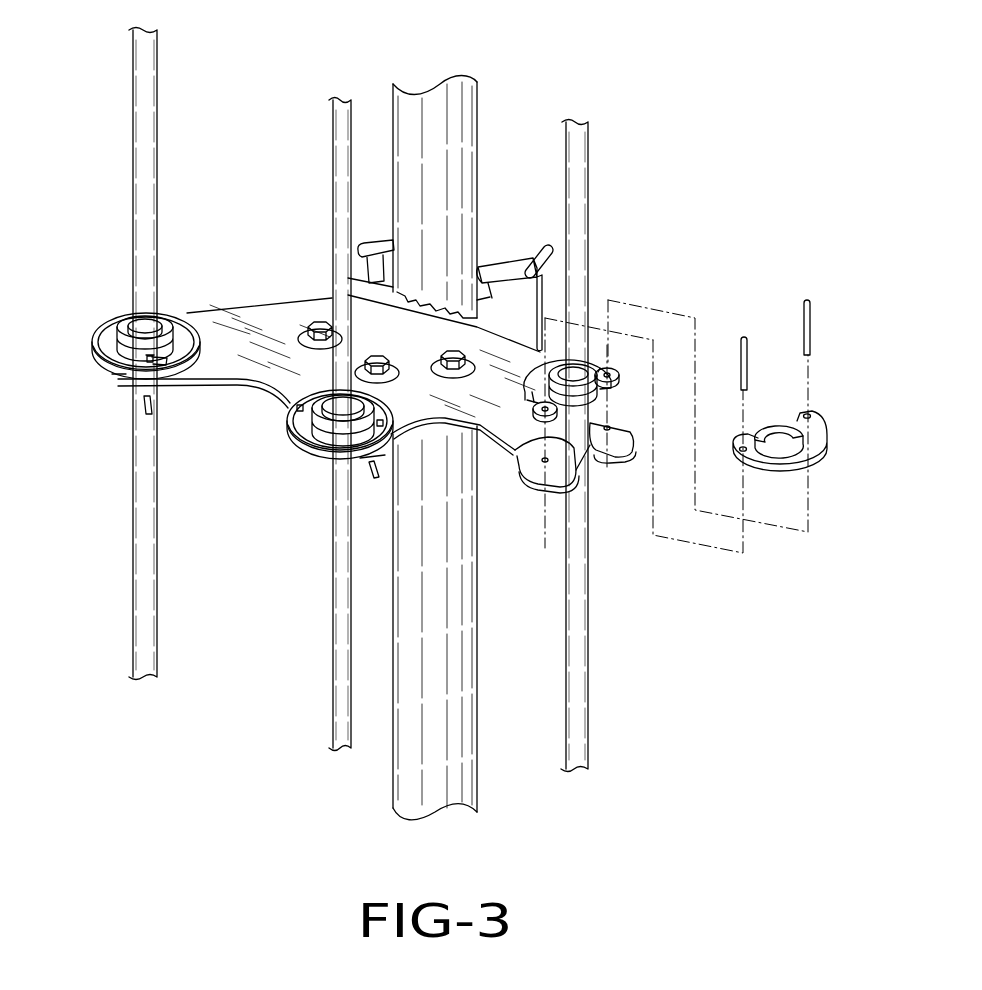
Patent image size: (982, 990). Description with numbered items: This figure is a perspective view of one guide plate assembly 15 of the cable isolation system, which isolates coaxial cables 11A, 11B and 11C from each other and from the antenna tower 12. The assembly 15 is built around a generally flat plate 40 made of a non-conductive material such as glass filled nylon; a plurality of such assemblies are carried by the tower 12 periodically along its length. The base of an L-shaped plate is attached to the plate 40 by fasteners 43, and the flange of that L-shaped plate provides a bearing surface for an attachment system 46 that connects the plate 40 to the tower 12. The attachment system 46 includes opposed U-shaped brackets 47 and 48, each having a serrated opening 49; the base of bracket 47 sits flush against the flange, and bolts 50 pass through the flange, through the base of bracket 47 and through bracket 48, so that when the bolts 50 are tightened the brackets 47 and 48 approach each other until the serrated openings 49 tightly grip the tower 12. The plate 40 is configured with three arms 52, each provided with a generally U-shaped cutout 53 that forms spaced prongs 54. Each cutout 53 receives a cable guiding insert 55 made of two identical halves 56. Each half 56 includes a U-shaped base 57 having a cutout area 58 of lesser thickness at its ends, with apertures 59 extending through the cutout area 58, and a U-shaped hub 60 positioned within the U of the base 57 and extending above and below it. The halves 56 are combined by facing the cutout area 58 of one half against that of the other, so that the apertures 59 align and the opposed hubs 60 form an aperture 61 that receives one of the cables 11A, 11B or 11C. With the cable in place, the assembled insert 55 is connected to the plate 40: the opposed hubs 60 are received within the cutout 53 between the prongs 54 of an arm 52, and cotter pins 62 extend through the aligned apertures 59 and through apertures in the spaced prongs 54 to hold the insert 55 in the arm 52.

The coaxial cable 11A is at (145, 596).
The coaxial cable 11B is at (340, 667).
The coaxial cable 11C is at (577, 695).
The antenna tower 12 is at (450, 128).
The guide plate assembly 15 is at (246, 173).
The flat plate 40 is at (424, 347).
The fasteners 43 is at (372, 358).
The attachment system 46 is at (519, 246).
The U-shaped bracket 47 is at (370, 288).
The U-shaped bracket 48 is at (517, 282).
The serrated opening 49 is at (450, 298).
The bolts 50 is at (545, 255).
The arm 52 is at (212, 342).
The U-shaped cutout 53 is at (600, 466).
The prongs 54 is at (128, 387).
The cable guiding insert 55 is at (90, 326).
The half 56 is at (604, 352).
The U-shaped base 57 is at (115, 350).
The cutout area 58 is at (612, 377).
The apertures 59 is at (805, 413).
The U-shaped hub 60 is at (167, 328).
The aperture 61 is at (133, 328).
The cotter pins 62 is at (150, 360).